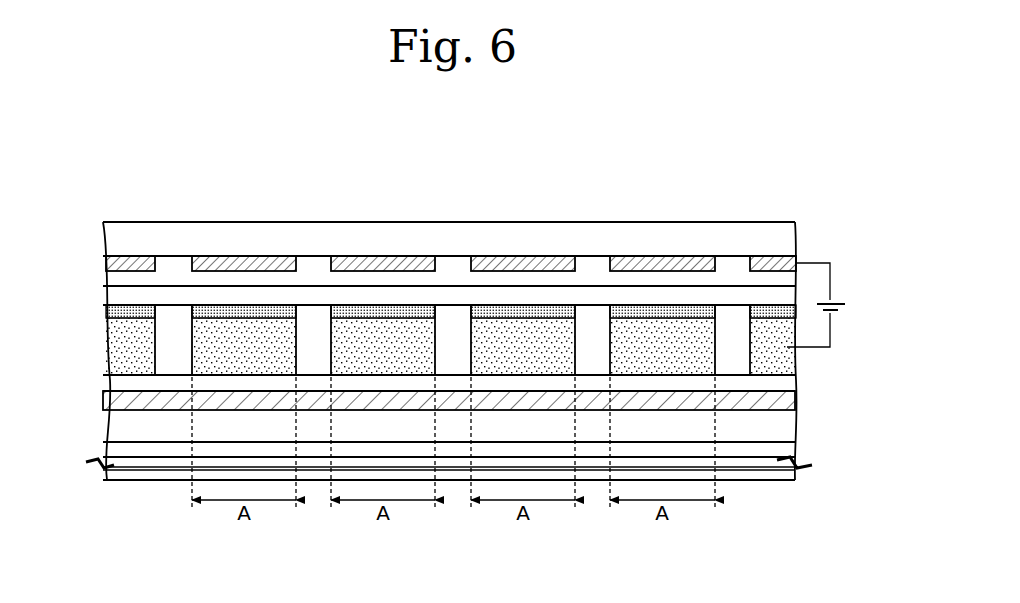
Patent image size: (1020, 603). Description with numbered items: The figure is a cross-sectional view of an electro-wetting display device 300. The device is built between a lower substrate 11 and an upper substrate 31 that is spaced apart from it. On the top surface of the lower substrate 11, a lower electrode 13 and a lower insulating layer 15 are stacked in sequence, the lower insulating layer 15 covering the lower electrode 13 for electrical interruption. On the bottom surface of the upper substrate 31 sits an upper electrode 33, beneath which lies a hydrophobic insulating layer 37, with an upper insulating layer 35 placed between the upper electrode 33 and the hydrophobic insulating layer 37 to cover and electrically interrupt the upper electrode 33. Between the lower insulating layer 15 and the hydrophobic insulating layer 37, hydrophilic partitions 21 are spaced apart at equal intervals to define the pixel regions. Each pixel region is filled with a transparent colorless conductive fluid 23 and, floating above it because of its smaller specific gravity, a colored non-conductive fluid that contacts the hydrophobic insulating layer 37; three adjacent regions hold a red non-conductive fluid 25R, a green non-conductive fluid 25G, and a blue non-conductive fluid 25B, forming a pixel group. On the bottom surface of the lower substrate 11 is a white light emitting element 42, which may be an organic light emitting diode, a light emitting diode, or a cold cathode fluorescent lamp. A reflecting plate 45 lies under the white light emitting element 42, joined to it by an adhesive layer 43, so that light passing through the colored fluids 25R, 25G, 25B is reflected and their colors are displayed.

The electro-wetting display device 300 is at (792, 136).
The upper substrate 31 is at (118, 238).
The upper electrode 33 is at (113, 261).
The upper insulating layer 35 is at (113, 280).
The hydrophobic insulating layer 37 is at (113, 298).
The red non-conductive fluid 25R is at (132, 314).
The green non-conductive fluid 25G is at (243, 314).
The blue non-conductive fluid 25B is at (382, 314).
The colorless conductive fluid 23 is at (123, 338).
The hydrophilic partitions 21 is at (163, 357).
The lower insulating layer 15 is at (113, 383).
The lower electrode 13 is at (113, 401).
The lower substrate 11 is at (113, 425).
The white light emitting element 42 is at (113, 450).
The adhesive layer 43 is at (762, 465).
The reflecting plate 45 is at (113, 478).